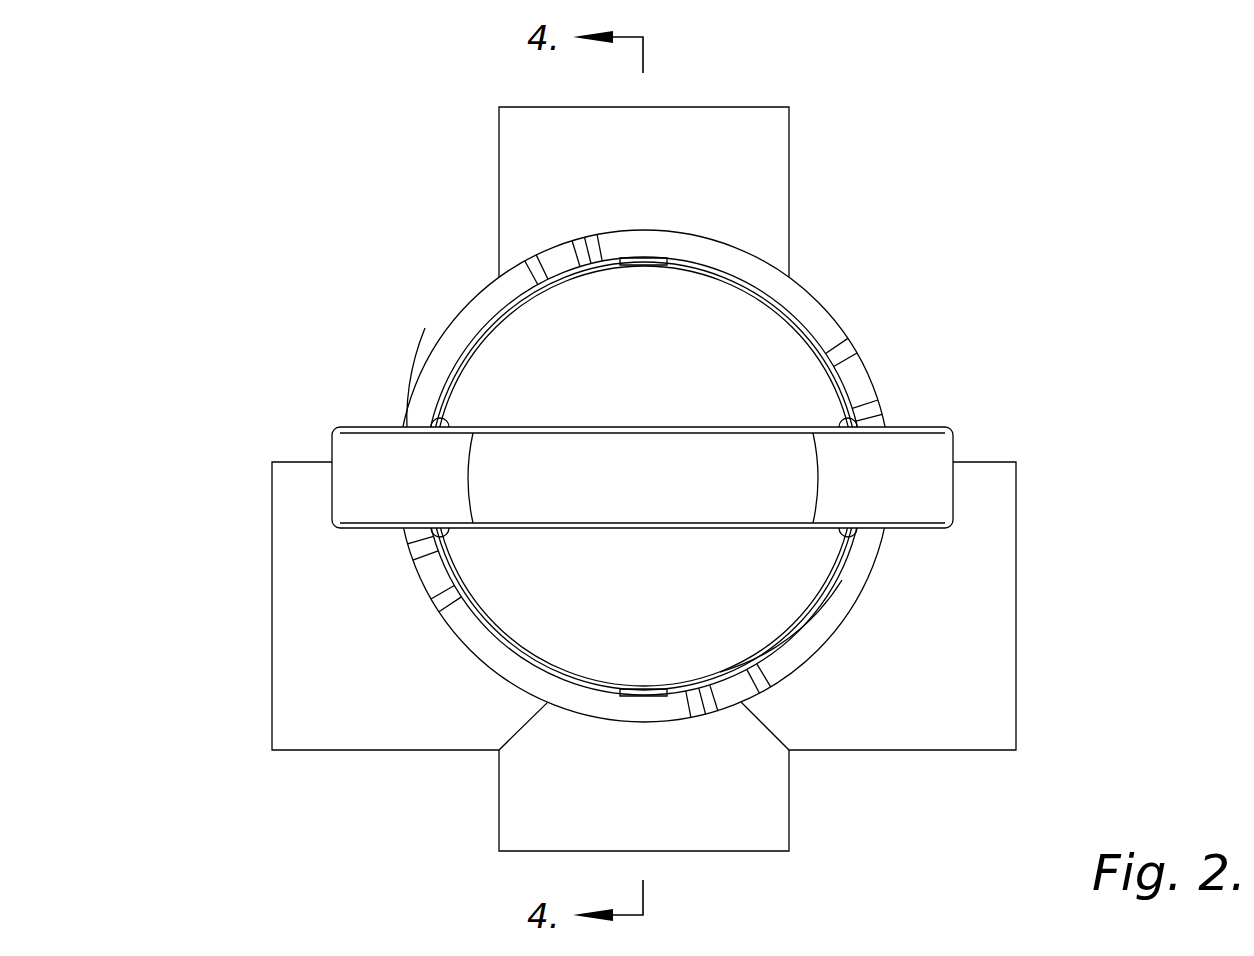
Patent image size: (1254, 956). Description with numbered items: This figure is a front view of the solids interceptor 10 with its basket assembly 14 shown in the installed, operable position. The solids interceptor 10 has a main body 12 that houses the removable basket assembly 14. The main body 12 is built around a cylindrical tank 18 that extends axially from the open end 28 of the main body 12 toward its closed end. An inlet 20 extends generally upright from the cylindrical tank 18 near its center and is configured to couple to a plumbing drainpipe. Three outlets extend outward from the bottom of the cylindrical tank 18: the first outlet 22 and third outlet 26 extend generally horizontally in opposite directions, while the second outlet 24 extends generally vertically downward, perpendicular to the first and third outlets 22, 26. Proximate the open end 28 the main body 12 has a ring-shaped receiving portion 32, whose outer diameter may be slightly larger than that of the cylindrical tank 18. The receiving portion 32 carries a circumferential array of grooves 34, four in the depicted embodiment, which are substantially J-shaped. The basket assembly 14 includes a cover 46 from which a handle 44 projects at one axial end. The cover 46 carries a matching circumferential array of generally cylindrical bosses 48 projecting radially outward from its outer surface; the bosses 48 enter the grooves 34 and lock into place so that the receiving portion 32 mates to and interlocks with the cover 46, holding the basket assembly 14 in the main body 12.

The solids interceptor 10 is at (310, 156).
The main body 12 is at (840, 330).
The basket assembly 14 is at (795, 583).
The cylindrical tank 18 is at (425, 365).
The inlet 20 is at (738, 107).
The first outlet 22 is at (1017, 620).
The second outlet 24 is at (742, 851).
The third outlet 26 is at (272, 570).
The open end 28 is at (795, 298).
The receiving portion 32 is at (405, 403).
The grooves 34 is at (555, 263).
The handle 44 is at (935, 450).
The cover 46 is at (733, 280).
The bosses 48 is at (648, 262).